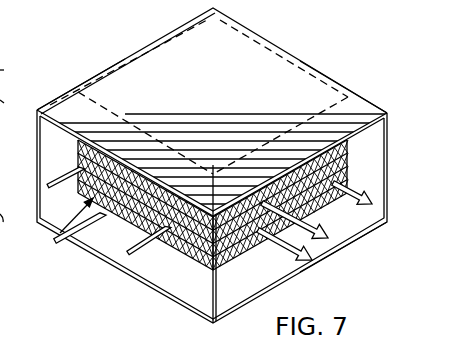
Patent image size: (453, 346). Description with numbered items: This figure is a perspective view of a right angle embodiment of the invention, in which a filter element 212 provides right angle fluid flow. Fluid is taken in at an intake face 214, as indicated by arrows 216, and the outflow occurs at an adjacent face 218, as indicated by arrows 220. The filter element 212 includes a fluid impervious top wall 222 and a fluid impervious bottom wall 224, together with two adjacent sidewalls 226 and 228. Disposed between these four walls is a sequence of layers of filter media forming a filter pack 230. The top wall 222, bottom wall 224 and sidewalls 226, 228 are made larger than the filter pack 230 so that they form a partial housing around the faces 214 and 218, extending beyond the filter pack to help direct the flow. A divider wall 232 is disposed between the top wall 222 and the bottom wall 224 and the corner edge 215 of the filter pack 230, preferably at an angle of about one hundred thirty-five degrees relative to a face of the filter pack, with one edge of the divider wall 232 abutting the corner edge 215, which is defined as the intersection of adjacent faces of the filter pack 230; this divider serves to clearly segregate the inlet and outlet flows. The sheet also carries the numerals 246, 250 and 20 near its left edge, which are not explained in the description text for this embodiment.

The filter element 212 is at (273, 43).
The face 214 is at (173, 224).
The corner edge 215 is at (210, 268).
The arrows 216 is at (80, 221).
The face 218 is at (341, 205).
The arrows 220 is at (283, 248).
The top wall 222 is at (222, 107).
The bottom wall 224 is at (340, 258).
The sidewall 226 is at (103, 72).
The sidewall 228 is at (352, 92).
The filter pack 230 is at (60, 233).
The divider wall 232 is at (212, 291).
The element 246 is at (18, 90).
The element 250 is at (18, 60).
The element 20 is at (12, 221).